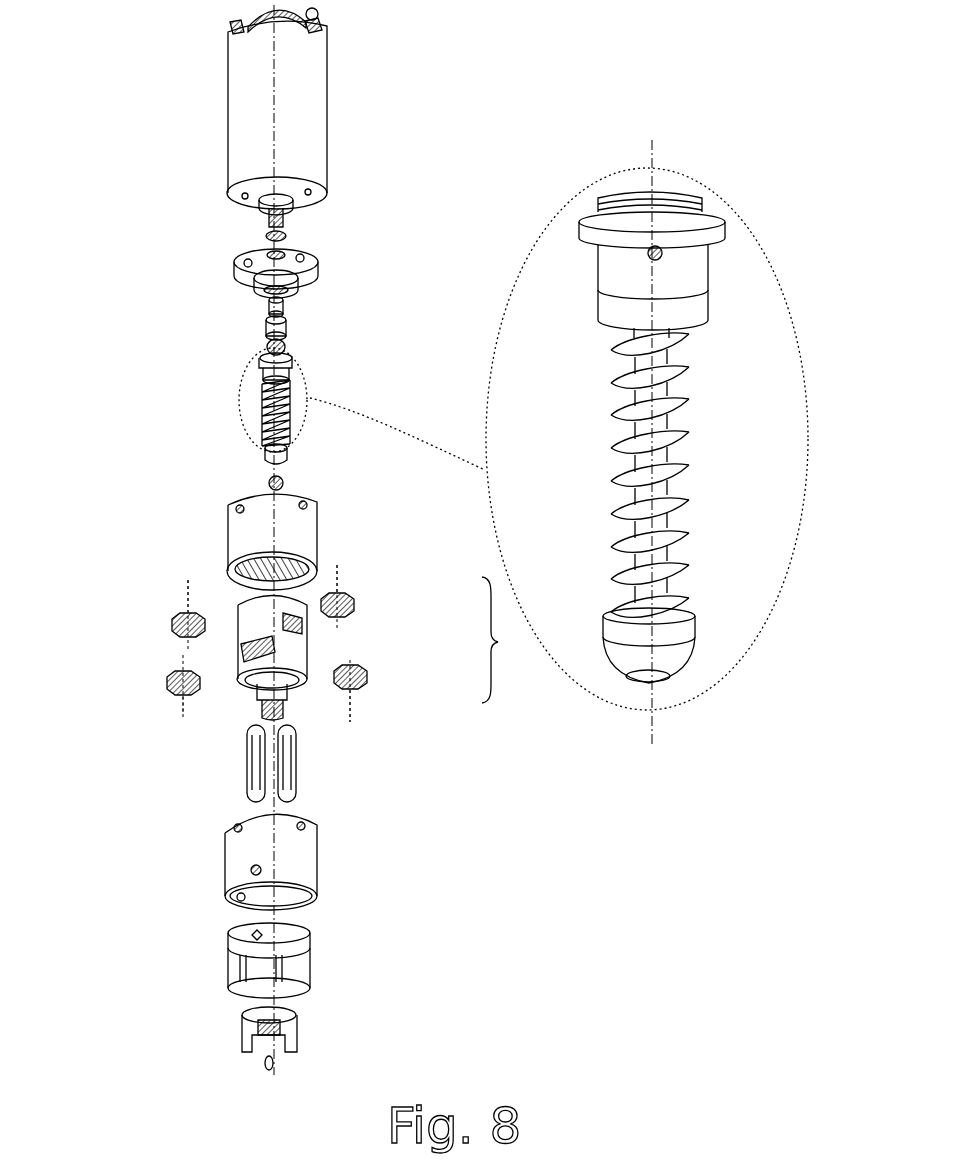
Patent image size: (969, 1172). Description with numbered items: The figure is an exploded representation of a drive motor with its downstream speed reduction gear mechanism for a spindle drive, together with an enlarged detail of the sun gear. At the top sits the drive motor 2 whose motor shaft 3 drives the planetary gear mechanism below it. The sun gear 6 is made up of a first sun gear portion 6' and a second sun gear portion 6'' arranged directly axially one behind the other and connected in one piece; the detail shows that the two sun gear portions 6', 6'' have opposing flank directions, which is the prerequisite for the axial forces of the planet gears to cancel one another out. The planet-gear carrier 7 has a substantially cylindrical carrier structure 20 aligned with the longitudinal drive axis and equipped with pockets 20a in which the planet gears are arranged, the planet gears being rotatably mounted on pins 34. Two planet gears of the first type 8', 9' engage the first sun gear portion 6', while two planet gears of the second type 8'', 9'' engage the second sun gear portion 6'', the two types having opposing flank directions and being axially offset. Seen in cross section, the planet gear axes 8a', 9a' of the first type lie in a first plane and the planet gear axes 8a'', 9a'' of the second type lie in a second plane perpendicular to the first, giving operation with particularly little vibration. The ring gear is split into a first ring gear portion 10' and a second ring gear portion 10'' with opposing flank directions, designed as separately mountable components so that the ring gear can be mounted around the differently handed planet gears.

The drive motor 2 is at (255, 98).
The motor shaft 3 is at (272, 206).
The sun gear 6 is at (497, 442).
The first sun gear portion 6' is at (705, 610).
The second sun gear portion 6'' is at (698, 274).
The planet-gear carrier 7 is at (502, 640).
The planet gear of the first type 8' is at (149, 687).
The planet gear of the second type 8'' is at (151, 615).
The planet gear axis 8a' is at (120, 735).
The planet gear axis 8a'' is at (123, 580).
The planet gear of the first type 9' is at (378, 691).
The planet gear of the second type 9'' is at (374, 596).
The planet gear axis 9a' is at (417, 721).
The planet gear axis 9a'' is at (413, 557).
The first ring gear portion 10' is at (222, 862).
The second ring gear portion 10'' is at (222, 542).
The carrier structure 20 is at (305, 597).
The pockets 20a is at (238, 648).
The pins 34 is at (293, 760).